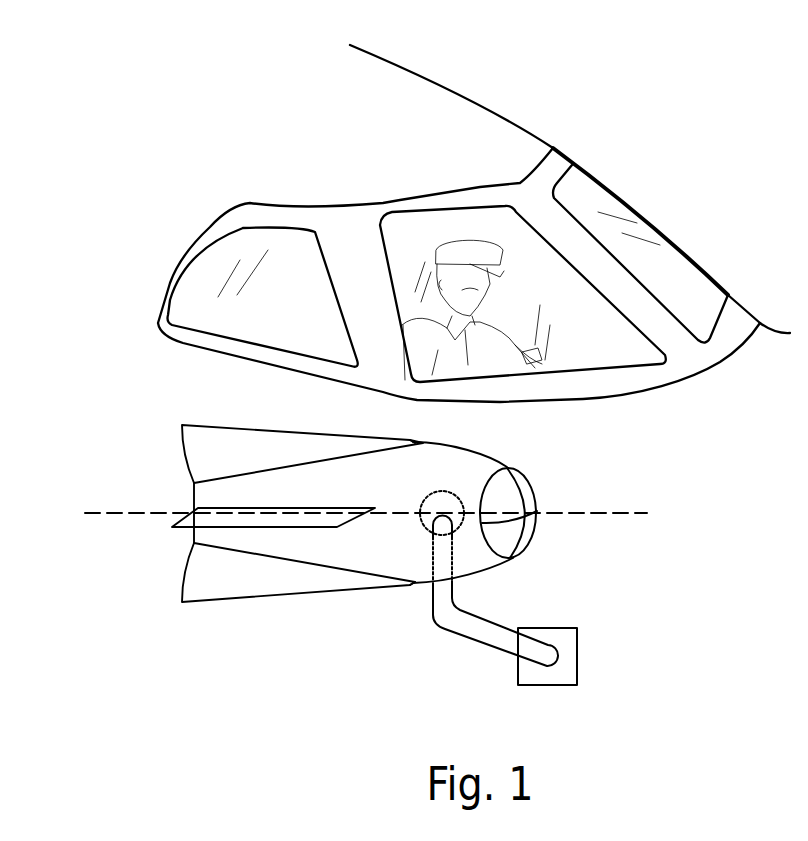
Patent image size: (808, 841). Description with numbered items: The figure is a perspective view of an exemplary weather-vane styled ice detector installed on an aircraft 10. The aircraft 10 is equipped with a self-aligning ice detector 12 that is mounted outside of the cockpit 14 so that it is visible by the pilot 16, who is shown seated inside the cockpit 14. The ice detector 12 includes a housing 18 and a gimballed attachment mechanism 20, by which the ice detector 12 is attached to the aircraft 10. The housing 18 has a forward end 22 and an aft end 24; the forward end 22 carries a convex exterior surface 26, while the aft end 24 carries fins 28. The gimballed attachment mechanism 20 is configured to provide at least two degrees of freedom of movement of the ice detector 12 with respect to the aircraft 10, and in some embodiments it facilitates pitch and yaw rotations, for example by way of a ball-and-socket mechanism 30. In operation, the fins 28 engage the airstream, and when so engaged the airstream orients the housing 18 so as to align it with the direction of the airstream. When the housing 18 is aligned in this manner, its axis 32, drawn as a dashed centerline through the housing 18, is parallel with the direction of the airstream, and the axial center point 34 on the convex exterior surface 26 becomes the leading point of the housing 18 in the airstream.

The aircraft 10 is at (652, 146).
The ice detector 12 is at (368, 611).
The cockpit 14 is at (666, 273).
The pilot 16 is at (450, 240).
The housing 18 is at (448, 480).
The gimballed attachment mechanism 20 is at (482, 632).
The forward end 22 is at (540, 488).
The aft end 24 is at (171, 567).
The convex exterior surface 26 is at (523, 487).
The fins 28 is at (193, 518).
The ball-and-socket mechanism 30 is at (458, 535).
The axis 32 is at (617, 510).
The axial center point 34 is at (537, 512).